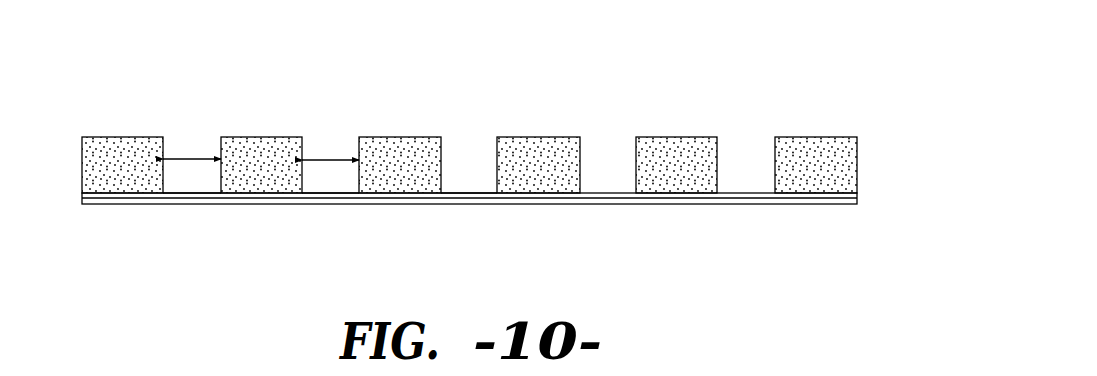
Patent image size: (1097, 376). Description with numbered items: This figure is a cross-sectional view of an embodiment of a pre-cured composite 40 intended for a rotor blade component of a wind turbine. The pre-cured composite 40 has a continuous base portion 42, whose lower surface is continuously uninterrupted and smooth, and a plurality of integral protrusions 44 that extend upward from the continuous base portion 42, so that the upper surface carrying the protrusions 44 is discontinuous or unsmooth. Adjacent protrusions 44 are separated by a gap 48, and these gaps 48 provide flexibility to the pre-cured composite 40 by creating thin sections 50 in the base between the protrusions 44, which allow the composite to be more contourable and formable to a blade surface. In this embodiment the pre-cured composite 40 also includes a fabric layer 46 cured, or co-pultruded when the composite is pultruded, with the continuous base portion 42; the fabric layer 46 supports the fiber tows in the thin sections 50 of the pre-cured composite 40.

The pre-cured composite 40 is at (462, 142).
The continuous base portion 42 is at (257, 198).
The integral protrusions 44 is at (128, 145).
The fabric layer 46 is at (398, 194).
The gap 48 is at (193, 158).
The thin sections 50 is at (192, 194).